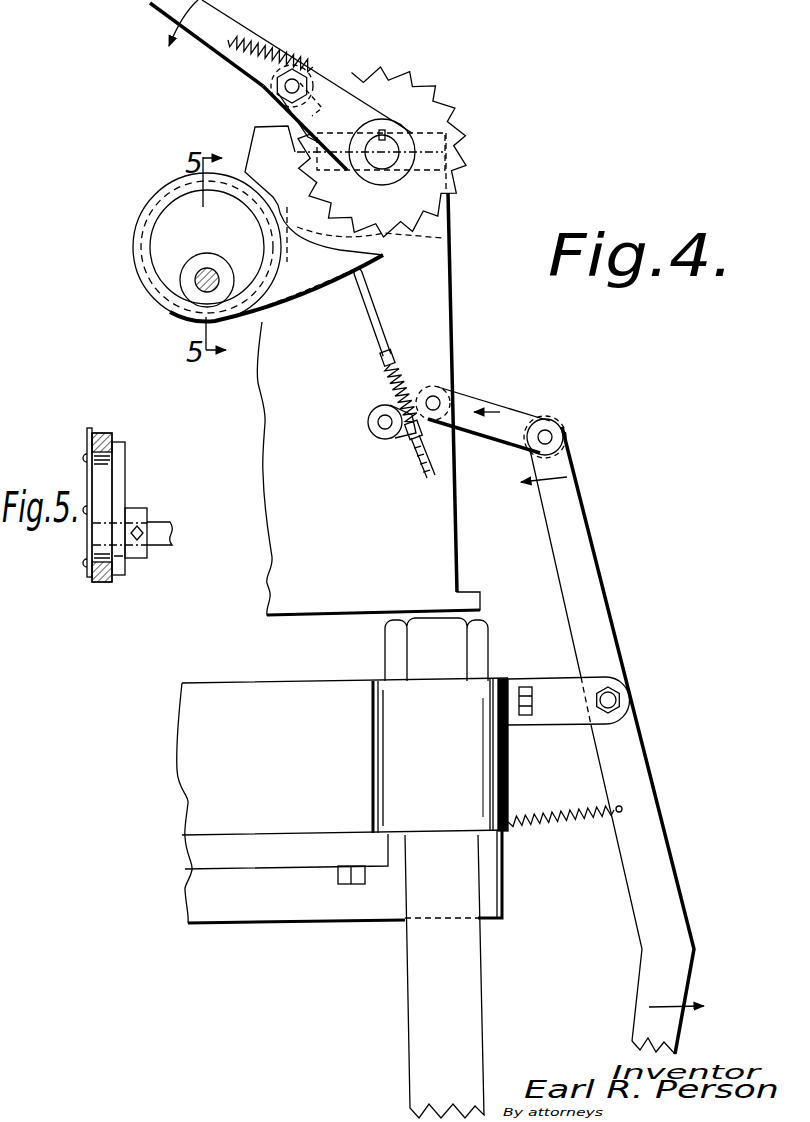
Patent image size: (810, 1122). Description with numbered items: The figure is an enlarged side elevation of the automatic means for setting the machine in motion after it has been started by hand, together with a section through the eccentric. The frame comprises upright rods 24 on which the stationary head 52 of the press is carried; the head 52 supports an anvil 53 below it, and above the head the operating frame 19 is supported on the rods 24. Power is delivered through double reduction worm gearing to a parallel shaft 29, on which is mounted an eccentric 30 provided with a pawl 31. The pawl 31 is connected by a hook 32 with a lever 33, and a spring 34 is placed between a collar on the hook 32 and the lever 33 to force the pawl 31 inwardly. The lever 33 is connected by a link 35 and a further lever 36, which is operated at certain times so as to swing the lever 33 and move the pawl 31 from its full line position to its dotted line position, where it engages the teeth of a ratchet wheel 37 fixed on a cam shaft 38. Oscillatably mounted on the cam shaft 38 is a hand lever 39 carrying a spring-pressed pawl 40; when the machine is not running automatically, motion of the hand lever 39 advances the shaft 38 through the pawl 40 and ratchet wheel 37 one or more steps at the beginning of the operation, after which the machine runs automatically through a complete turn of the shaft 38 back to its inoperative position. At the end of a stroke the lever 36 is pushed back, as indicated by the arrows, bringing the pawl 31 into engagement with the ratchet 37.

In FIG. 4, the operating frame 19 is at (300, 614).
In FIG. 4, the upright rods 24 is at (410, 988).
In FIG. 4, the parallel shaft 29 is at (197, 283).
In FIG. 5, the parallel shaft 29 is at (163, 523).
In FIG. 4, the eccentric 30 is at (162, 240).
In FIG. 5, the eccentric 30 is at (117, 473).
In FIG. 4, the pawl 31 is at (323, 295).
In FIG. 5, the pawl 31 is at (103, 422).
In FIG. 4, the hook 32 is at (390, 318).
In FIG. 4, the lever 33 is at (385, 433).
In FIG. 4, the spring 34 is at (391, 388).
In FIG. 4, the link 35 is at (493, 407).
In FIG. 4, the lever 36 is at (567, 590).
In FIG. 4, the ratchet wheel 37 is at (433, 103).
In FIG. 4, the cam shaft 38 is at (382, 152).
In FIG. 4, the hand lever 39 is at (222, 51).
In FIG. 4, the spring-pressed pawl 40 is at (280, 102).
In FIG. 4, the head 52 is at (200, 773).
In FIG. 4, the anvil 53 is at (292, 912).